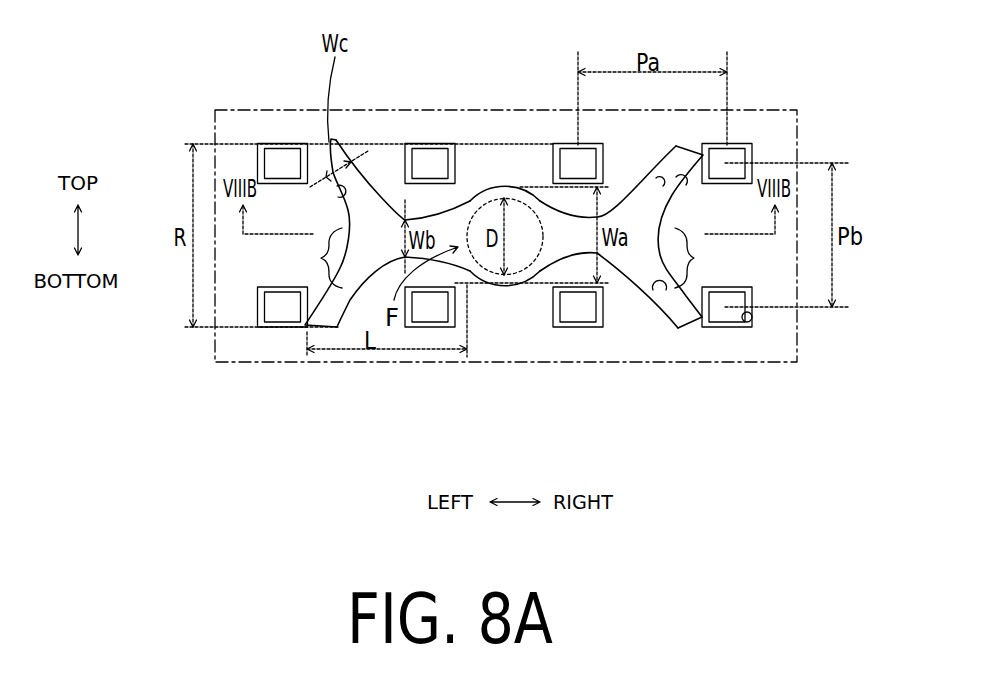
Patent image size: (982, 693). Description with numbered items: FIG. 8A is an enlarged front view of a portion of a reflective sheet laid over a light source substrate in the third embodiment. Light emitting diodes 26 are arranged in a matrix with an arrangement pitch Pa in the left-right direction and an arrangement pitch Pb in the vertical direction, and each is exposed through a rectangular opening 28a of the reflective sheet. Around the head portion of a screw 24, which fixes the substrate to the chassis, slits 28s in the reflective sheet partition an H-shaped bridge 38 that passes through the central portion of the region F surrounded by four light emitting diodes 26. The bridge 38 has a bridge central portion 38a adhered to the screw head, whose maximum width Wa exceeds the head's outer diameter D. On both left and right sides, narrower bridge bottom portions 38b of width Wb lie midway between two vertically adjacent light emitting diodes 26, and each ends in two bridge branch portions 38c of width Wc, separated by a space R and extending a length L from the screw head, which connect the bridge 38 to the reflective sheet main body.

The screw 24 is at (497, 278).
The light emitting diode 26 is at (285, 160).
The opening 28a is at (265, 158).
The slit 28s is at (336, 196).
The bridge 38 is at (505, 277).
The bridge central portion 38a is at (527, 284).
The bridge bottom portion 38b is at (422, 219).
The bridge branch portion 38c is at (505, 233).